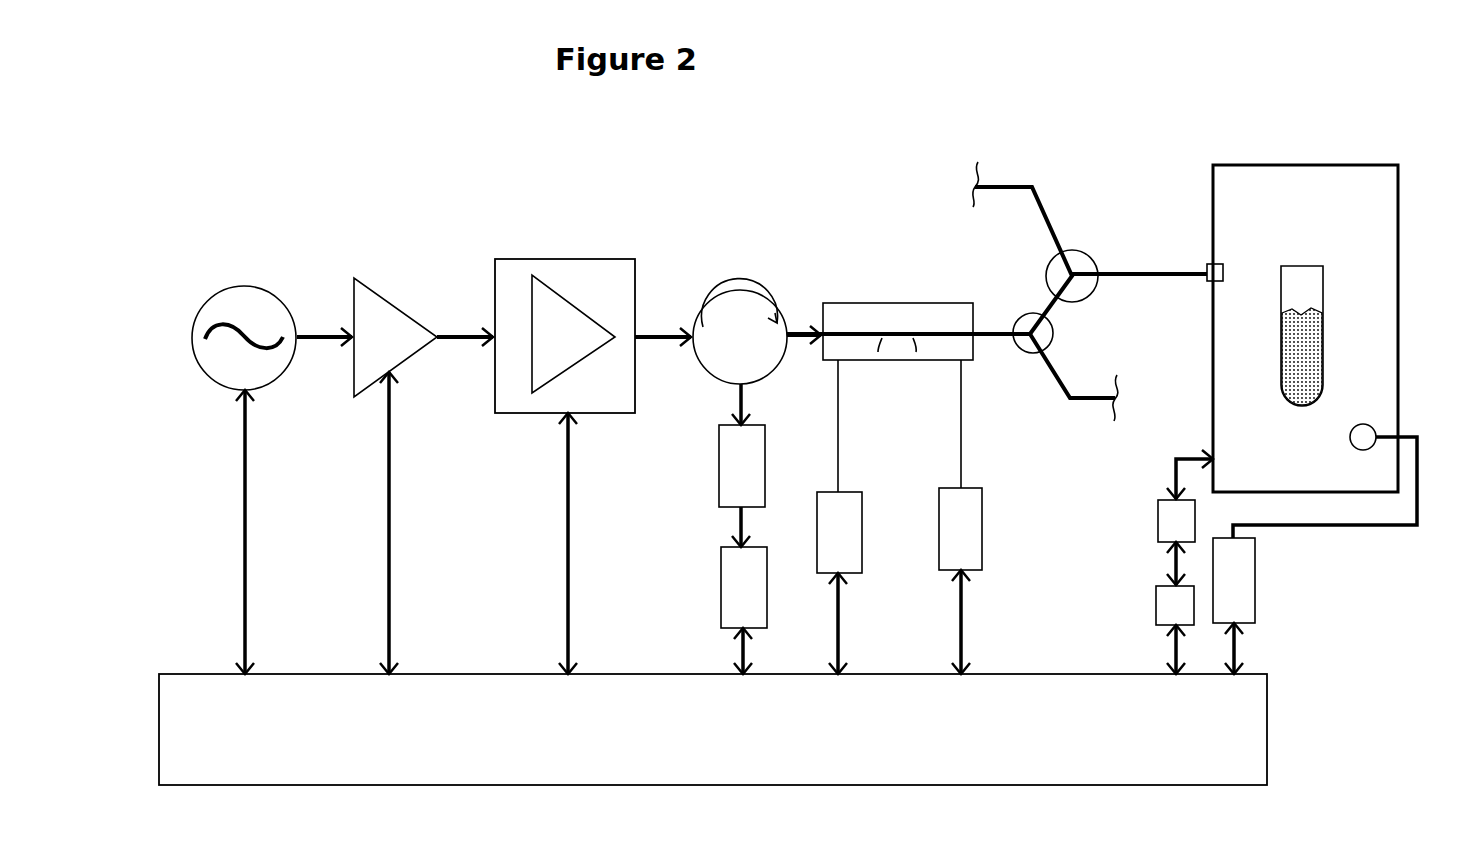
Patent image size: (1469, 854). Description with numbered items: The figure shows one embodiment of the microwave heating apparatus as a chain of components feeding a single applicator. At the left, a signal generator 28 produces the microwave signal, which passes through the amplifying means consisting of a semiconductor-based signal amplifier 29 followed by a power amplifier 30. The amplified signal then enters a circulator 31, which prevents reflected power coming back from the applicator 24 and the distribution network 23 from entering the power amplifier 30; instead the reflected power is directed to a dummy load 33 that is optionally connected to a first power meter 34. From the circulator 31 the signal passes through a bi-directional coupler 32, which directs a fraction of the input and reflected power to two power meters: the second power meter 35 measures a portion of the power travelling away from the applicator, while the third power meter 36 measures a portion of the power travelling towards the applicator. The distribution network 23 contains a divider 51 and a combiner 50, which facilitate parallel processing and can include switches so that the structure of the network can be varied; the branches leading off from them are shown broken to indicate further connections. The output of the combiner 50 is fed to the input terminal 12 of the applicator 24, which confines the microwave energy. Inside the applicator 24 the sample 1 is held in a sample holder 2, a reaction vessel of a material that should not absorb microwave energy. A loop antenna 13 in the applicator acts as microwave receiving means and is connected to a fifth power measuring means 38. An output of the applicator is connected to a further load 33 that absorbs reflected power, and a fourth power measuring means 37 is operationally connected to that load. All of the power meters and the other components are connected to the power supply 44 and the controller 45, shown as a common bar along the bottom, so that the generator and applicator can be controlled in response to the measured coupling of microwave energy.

The sample 1 is at (1302, 356).
The sample holder 2 is at (1322, 319).
The input terminal 12 is at (1206, 263).
The loop antenna 13 is at (1375, 422).
The distribution network 23 is at (1005, 153).
The applicator 24 is at (1305, 328).
The signal generator 28 is at (272, 480).
The signal amplifier 29 is at (423, 476).
The power amplifier 30 is at (593, 466).
The circulator 31 is at (757, 352).
The bi-directional coupler 32 is at (908, 317).
The dummy load 33 is at (966, 505).
The first power meter 34 is at (744, 610).
The second power meter 35 is at (839, 517).
The third power meter 36 is at (960, 517).
The fourth power measuring means 37 is at (1175, 630).
The fifth power measuring means 38 is at (1234, 606).
The power supply 44 is at (713, 729).
The controller 45 is at (786, 735).
The combiner 50 is at (1081, 253).
The divider 51 is at (1022, 357).